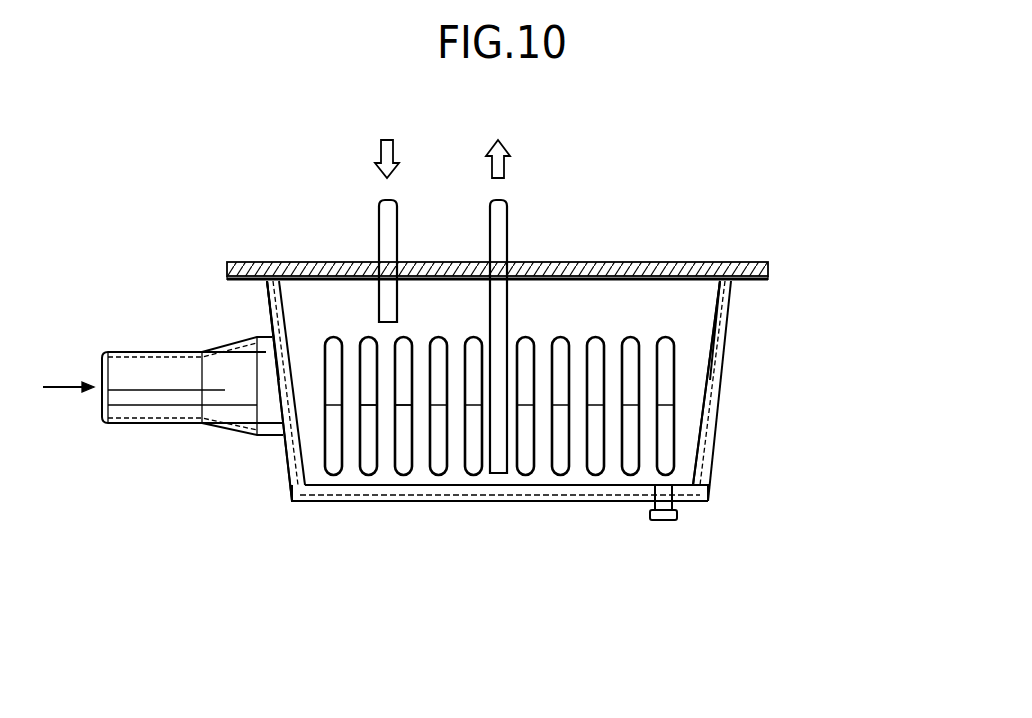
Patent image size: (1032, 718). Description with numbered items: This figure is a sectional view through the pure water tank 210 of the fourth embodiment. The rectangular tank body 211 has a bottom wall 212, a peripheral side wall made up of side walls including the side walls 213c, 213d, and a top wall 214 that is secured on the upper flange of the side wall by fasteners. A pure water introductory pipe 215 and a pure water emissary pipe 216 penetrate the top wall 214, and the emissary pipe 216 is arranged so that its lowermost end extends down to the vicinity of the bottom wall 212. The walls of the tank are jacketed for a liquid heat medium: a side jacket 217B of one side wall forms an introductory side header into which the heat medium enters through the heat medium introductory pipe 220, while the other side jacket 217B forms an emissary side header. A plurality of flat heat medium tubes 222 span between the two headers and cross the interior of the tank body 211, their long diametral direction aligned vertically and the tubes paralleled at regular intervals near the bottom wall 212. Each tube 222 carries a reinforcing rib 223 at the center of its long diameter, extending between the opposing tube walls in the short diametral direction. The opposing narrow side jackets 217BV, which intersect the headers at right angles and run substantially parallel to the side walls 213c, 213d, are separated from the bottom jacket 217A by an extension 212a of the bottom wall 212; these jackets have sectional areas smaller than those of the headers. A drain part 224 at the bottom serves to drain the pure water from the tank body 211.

The pure water tank 210 is at (693, 254).
The tank body 211 is at (255, 260).
The bottom wall 212 is at (540, 482).
The extension of the bottom wall 212a is at (300, 503).
The side wall 213c is at (288, 328).
The side wall 213d is at (716, 352).
The top wall 214 is at (633, 261).
The pure water introductory pipe 215 is at (398, 222).
The pure water emissary pipe 216 is at (508, 222).
The bottom jacket 217A is at (425, 503).
The side jacket 217BV is at (287, 440).
The side jacket 217B is at (712, 412).
The heat medium introductory pipe 220 is at (150, 423).
The heat medium tube 222 is at (589, 335).
The reinforcing rib 223 is at (404, 408).
The drain part 224 is at (644, 521).